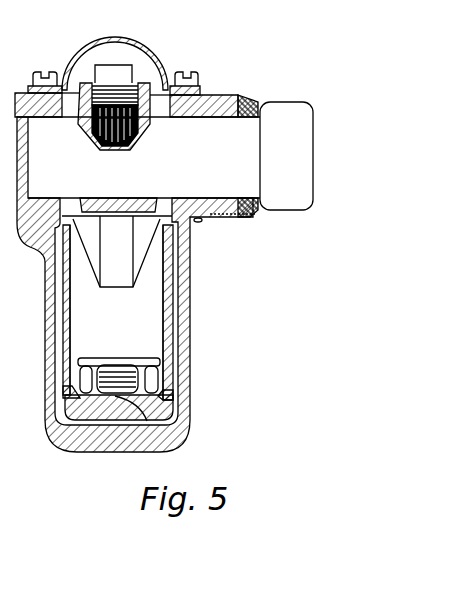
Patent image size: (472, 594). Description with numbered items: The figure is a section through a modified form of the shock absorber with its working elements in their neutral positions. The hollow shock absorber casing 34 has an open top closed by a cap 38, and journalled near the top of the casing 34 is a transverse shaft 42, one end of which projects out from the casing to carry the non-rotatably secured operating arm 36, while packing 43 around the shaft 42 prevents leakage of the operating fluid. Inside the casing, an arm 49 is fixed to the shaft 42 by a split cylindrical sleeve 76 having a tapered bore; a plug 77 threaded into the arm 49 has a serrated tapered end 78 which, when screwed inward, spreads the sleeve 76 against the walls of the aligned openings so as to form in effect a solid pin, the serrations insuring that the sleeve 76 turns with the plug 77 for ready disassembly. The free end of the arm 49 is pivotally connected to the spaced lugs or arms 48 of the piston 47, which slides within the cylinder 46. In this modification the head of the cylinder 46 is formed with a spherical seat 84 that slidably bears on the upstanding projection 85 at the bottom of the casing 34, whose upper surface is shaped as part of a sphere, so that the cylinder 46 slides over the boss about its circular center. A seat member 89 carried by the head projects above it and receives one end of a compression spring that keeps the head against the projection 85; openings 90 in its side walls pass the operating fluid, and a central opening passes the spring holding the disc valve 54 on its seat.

The shock absorber casing 34 is at (186, 282).
The operating arm 36 is at (286, 156).
The cap 38 is at (102, 48).
The transverse shaft 42 is at (144, 157).
The packing 43 is at (247, 218).
The cylinder 46 is at (174, 322).
The piston 47 is at (116, 312).
The lugs or arms 48 is at (143, 241).
The arm 49 is at (116, 251).
The disc valve 54 is at (165, 393).
The split cylindrical sleeve 76 is at (93, 134).
The plug 77 is at (128, 75).
The tapered end 78 is at (125, 147).
The spherical seat 84 is at (147, 421).
The upstanding projection 85 is at (112, 397).
The seat member 89 is at (78, 362).
The openings 90 is at (80, 378).